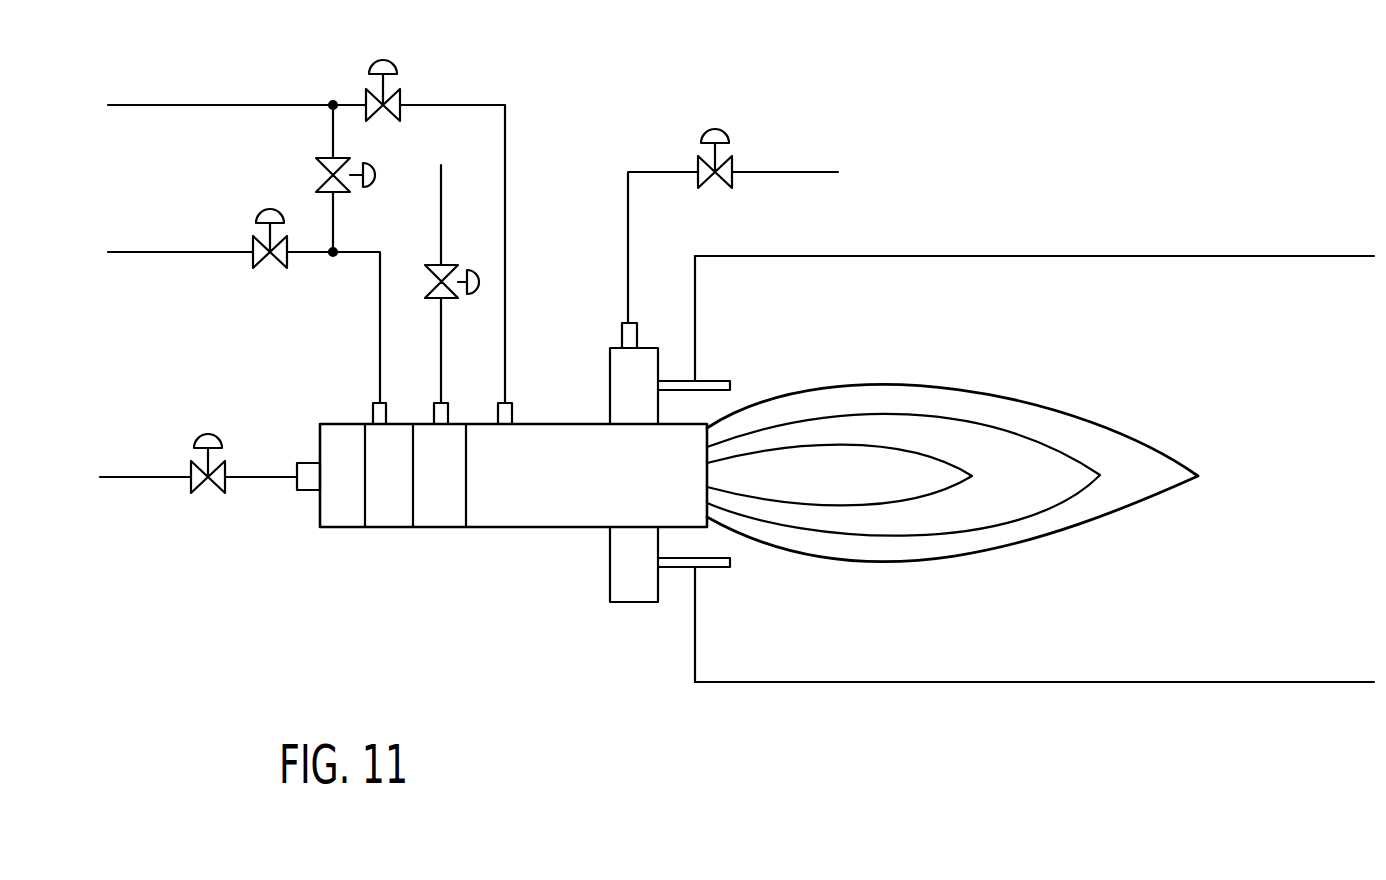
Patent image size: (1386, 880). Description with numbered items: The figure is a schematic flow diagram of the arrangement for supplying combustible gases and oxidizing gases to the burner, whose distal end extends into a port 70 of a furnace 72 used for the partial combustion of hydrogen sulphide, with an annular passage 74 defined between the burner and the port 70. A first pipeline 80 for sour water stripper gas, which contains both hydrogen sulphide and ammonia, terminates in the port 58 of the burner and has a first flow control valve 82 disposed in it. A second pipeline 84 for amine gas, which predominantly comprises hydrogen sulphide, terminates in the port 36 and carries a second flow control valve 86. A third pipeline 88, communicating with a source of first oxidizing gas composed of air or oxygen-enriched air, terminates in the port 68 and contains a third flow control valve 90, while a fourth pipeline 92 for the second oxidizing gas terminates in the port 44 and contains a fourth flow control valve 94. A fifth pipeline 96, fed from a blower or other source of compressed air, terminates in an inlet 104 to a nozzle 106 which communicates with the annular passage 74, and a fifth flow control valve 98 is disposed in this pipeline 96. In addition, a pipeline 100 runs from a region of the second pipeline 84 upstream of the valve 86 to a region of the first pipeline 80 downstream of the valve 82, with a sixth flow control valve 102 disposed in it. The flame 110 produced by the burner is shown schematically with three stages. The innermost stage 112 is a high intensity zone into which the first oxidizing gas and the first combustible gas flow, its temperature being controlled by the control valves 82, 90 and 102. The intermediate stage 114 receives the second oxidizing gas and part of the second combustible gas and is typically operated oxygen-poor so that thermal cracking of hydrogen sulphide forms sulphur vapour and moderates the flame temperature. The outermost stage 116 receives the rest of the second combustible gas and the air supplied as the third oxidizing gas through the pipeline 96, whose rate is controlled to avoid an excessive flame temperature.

The port 36 is at (513, 412).
The port 44 is at (434, 412).
The port 58 is at (373, 412).
The port 68 is at (302, 492).
The port 70 is at (680, 572).
The furnace 72 is at (826, 686).
The annular passage 74 is at (705, 407).
The first pipeline 80 is at (182, 250).
The first flow control valve 82 is at (253, 244).
The second pipeline 84 is at (172, 104).
The second flow control valve 86 is at (402, 97).
The third pipeline 88 is at (155, 476).
The third flow control valve 90 is at (214, 492).
The fourth pipeline 92 is at (443, 193).
The fourth flow control valve 94 is at (447, 300).
The fifth pipeline 96 is at (797, 171).
The fifth flow control valve 98 is at (732, 183).
The pipeline 100 is at (333, 137).
The sixth flow control valve 102 is at (348, 192).
The inlet 104 is at (621, 333).
The nozzle 106 is at (618, 602).
The flame 110 is at (952, 470).
The innermost stage 112 is at (872, 484).
The intermediate stage 114 is at (888, 428).
The outermost stage 116 is at (1124, 461).